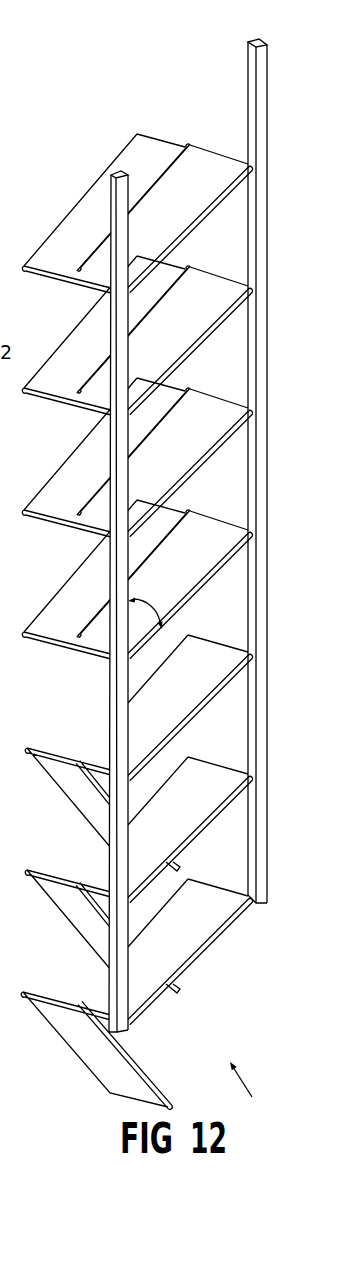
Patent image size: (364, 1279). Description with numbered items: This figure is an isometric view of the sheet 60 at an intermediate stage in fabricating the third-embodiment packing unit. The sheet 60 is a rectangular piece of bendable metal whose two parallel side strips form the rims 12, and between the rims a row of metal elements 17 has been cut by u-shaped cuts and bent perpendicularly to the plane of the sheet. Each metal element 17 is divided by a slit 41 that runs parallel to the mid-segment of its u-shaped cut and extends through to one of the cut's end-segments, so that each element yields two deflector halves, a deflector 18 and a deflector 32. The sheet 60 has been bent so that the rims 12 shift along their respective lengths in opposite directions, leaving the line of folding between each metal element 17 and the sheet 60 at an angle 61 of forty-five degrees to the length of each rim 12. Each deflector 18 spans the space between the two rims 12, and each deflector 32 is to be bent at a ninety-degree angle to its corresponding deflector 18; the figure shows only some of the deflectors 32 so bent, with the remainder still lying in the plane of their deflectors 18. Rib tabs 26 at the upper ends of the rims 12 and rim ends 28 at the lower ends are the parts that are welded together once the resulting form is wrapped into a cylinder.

The rim 12 is at (263, 362).
The metal element 17 is at (67, 270).
The deflector 18 is at (168, 702).
The rib tab 26 is at (262, 63).
The rim end 28 is at (265, 904).
The deflector 32 is at (75, 805).
The slit 41 is at (152, 190).
The sheet 60 is at (253, 1093).
The angle 61 is at (146, 598).